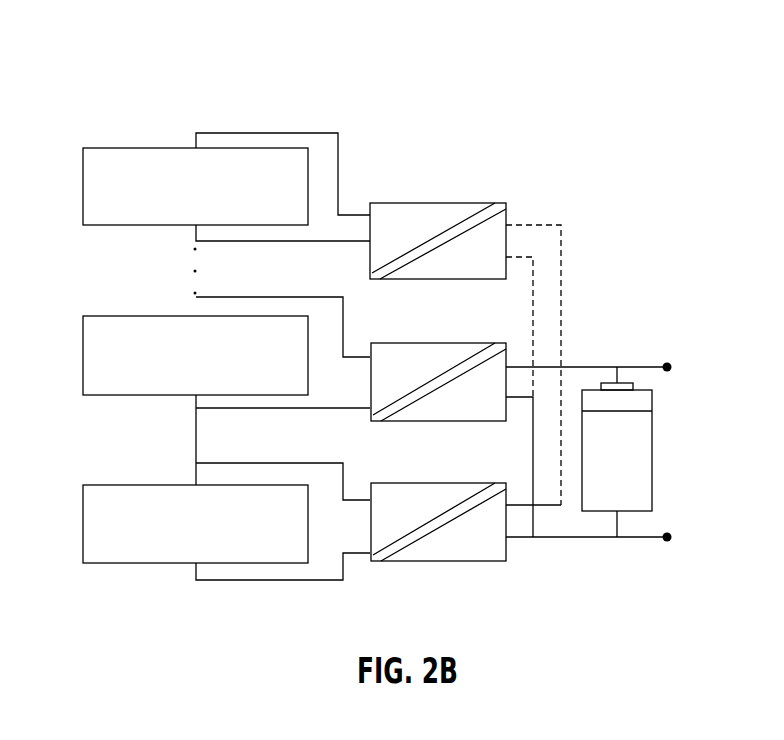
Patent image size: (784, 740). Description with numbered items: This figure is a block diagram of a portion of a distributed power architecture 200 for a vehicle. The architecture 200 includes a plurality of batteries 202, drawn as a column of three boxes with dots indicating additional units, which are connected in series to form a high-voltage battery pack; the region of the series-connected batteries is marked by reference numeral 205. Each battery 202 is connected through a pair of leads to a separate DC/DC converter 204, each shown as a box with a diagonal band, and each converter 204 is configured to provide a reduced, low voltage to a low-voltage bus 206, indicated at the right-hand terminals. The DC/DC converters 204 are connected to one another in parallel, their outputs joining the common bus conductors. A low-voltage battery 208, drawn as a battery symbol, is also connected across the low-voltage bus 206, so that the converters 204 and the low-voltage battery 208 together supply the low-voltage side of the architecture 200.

The distributed power architecture 200 is at (499, 75).
The battery 202 is at (152, 147).
The DC/DC converter 204 is at (487, 192).
The battery module string 205 is at (207, 95).
The low-voltage bus 206 is at (667, 348).
The low-voltage battery 208 is at (635, 450).